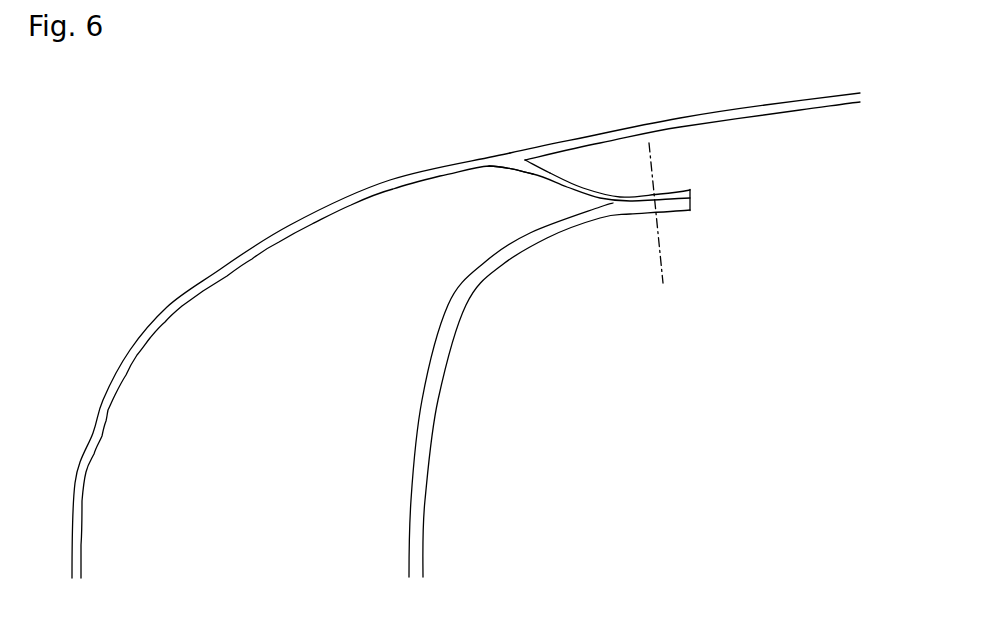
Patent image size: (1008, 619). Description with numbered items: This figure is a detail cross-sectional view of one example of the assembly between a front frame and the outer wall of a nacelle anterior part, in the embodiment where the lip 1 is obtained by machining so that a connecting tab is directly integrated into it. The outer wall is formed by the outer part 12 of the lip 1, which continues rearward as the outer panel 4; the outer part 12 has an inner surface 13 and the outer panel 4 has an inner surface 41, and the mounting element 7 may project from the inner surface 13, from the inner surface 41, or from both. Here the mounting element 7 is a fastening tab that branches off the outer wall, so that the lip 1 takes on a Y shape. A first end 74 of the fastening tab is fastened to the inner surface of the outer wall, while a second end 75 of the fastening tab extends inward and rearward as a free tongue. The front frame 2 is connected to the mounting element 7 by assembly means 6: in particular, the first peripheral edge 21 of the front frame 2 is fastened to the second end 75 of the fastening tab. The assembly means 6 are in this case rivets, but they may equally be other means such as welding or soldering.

The lip 1 is at (302, 344).
The outer part 12 is at (373, 189).
The inner surface 13 is at (352, 207).
The front frame 2 is at (549, 390).
The first peripheral edge 21 is at (598, 217).
The outer panel 4 is at (706, 113).
The inner surface 41 is at (810, 116).
The assembly means 6 is at (672, 243).
The mounting element 7 is at (618, 160).
The first end 74 is at (512, 158).
The second end 75 is at (690, 193).